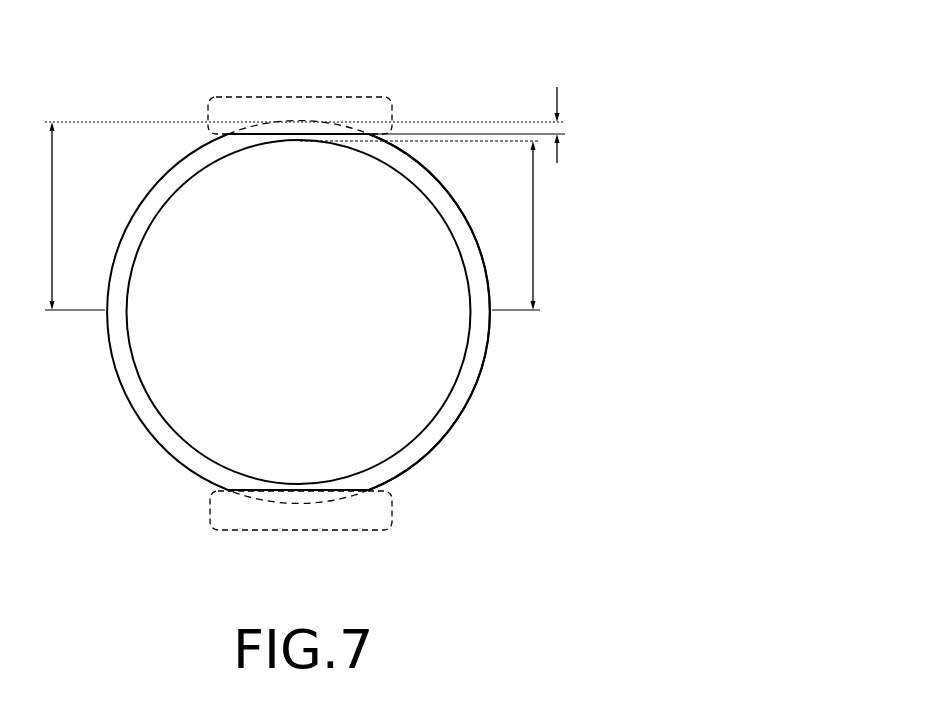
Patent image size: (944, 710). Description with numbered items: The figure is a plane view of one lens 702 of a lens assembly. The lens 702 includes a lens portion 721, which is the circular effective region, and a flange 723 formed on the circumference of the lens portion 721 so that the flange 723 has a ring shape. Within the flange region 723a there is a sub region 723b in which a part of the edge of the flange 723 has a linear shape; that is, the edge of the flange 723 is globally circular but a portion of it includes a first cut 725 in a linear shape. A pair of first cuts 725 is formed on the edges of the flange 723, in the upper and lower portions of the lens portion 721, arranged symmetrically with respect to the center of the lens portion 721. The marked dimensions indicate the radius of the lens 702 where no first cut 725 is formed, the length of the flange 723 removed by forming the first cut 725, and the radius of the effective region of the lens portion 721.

The lens 702 is at (448, 78).
The lens portion 721 is at (417, 383).
The flange 723 is at (410, 466).
The flange region 723a is at (486, 358).
The sub region 723b is at (208, 110).
The first cut 725 is at (266, 127).